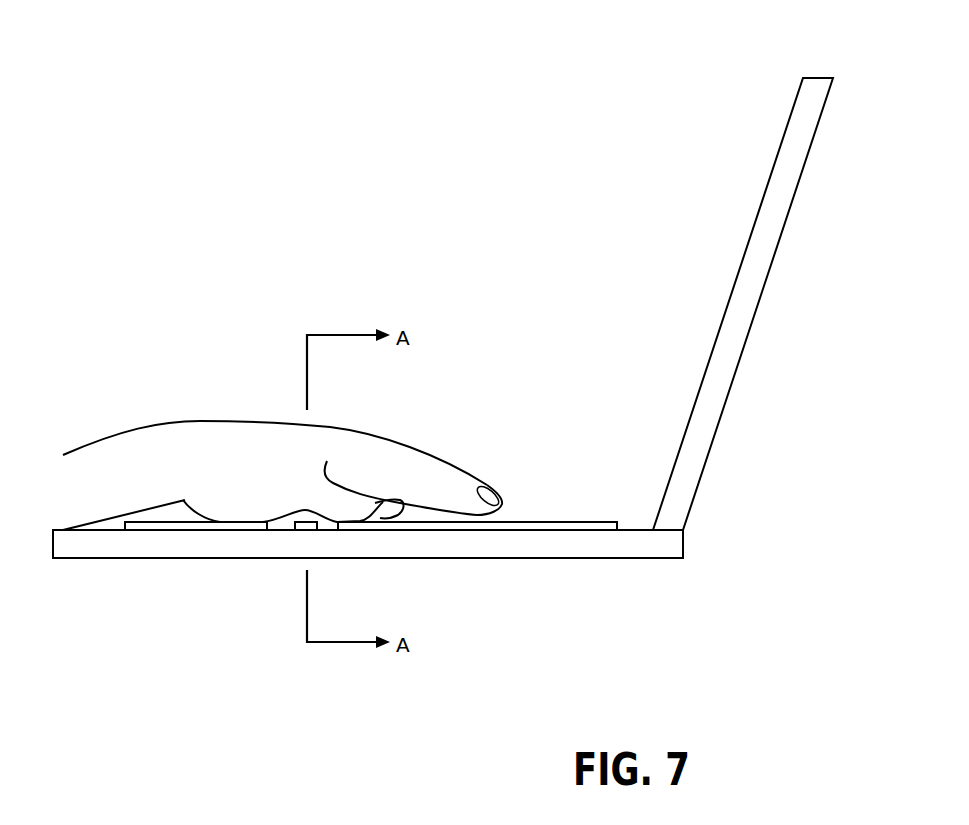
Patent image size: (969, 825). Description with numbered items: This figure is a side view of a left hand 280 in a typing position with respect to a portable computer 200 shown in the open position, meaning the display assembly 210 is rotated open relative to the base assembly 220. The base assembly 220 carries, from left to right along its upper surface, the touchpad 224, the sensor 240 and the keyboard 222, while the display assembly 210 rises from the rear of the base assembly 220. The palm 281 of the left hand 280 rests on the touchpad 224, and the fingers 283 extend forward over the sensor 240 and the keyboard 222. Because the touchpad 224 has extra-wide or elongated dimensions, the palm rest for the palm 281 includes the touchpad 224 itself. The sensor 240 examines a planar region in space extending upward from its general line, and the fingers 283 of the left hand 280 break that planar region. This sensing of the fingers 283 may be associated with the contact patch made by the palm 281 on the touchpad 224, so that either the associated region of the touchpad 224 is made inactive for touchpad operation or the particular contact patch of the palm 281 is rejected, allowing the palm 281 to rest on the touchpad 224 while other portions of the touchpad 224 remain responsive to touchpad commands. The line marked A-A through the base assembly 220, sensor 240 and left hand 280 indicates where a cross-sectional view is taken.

The portable computer 200 is at (665, 188).
The display assembly 210 is at (800, 120).
The base assembly 220 is at (628, 540).
The keyboard 222 is at (565, 517).
The touchpad 224 is at (145, 528).
The sensor 240 is at (300, 531).
The left hand 280 is at (93, 470).
The palm 281 is at (228, 510).
The fingers 283 is at (413, 462).